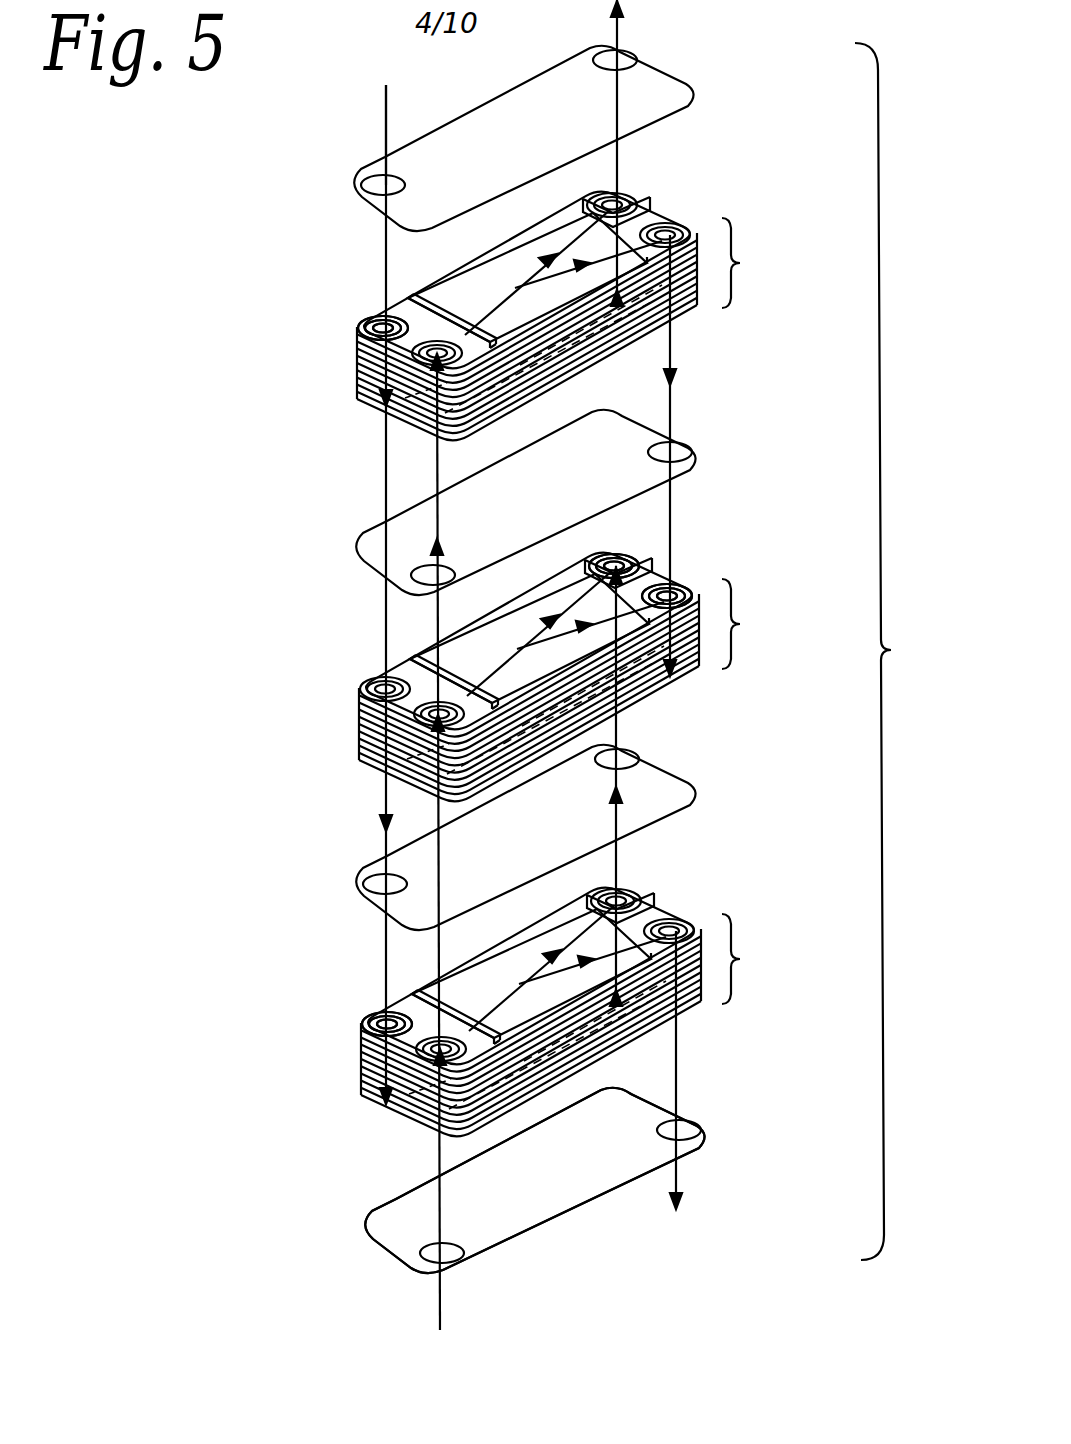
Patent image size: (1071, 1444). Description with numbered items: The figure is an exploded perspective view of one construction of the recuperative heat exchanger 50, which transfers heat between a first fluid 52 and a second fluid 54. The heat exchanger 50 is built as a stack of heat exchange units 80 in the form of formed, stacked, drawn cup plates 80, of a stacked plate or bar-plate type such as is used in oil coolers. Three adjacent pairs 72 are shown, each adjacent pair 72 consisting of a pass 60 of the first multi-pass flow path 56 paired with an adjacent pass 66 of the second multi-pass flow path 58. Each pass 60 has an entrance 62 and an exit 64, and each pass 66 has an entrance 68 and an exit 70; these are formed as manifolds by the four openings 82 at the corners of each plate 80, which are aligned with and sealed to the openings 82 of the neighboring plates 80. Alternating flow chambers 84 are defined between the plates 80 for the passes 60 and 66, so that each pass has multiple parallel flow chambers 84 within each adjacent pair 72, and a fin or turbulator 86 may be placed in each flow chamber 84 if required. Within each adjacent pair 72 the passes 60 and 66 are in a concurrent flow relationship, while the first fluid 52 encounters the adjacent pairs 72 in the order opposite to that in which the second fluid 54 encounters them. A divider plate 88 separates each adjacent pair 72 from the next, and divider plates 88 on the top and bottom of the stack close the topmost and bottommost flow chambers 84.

The heat exchanger 50 is at (893, 651).
The first fluid 52 is at (437, 1297).
The second fluid 54 is at (384, 96).
The first multi-pass flow path 56 is at (437, 1216).
The second multi-pass flow path 58 is at (384, 140).
The pass of the first flow path 60 is at (527, 282).
The entrance of first flow path pass 62 is at (428, 442).
The exit of first flow path pass 64 is at (640, 190).
The pass of the second flow path 66 is at (420, 300).
The entrance of second flow path pass 68 is at (352, 322).
The exit of second flow path pass 70 is at (690, 220).
The adjacent pair 72 is at (753, 611).
The heat exchange unit 80 is at (360, 349).
The opening 82 is at (612, 885).
The flow chamber 84 is at (400, 315).
The fin or turbulator 86 is at (487, 268).
The divider plate 88 is at (683, 62).